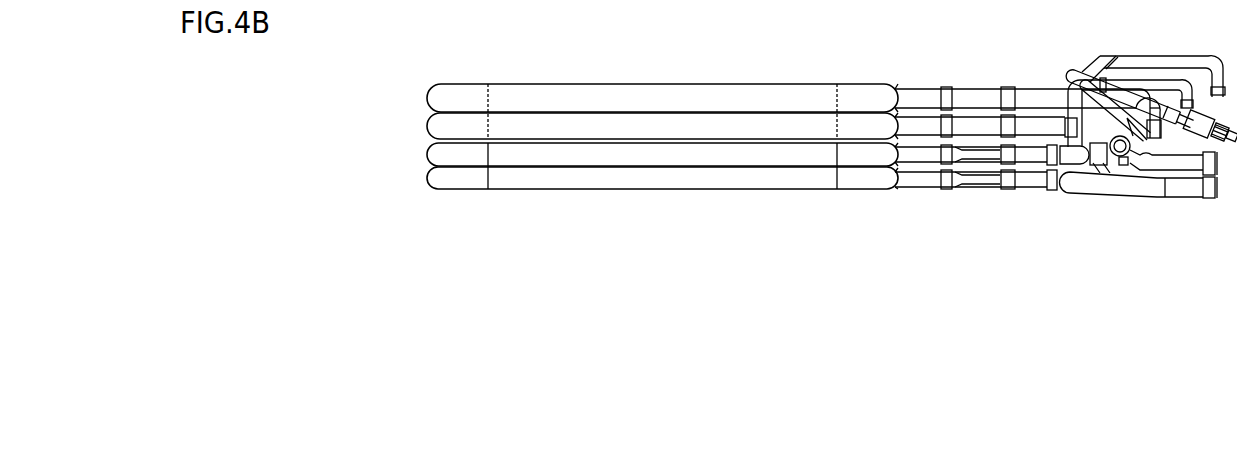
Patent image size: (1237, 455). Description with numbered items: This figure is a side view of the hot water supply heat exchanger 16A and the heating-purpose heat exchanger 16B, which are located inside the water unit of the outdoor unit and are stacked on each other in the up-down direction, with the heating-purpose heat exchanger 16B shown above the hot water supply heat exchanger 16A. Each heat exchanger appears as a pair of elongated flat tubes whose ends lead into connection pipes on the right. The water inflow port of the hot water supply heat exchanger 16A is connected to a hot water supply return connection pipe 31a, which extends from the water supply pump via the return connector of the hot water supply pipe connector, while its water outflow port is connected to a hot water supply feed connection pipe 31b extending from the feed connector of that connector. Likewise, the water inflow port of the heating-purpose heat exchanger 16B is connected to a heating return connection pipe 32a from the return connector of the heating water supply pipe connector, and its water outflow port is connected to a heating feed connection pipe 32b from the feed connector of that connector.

The hot water supply heat exchanger 16A is at (422, 142).
The heating-purpose heat exchanger 16B is at (422, 87).
The hot water supply return connection pipe 31a is at (1032, 155).
The hot water supply feed connection pipe 31b is at (1105, 183).
The heating return connection pipe 32a is at (1033, 128).
The heating feed connection pipe 32b is at (1047, 100).